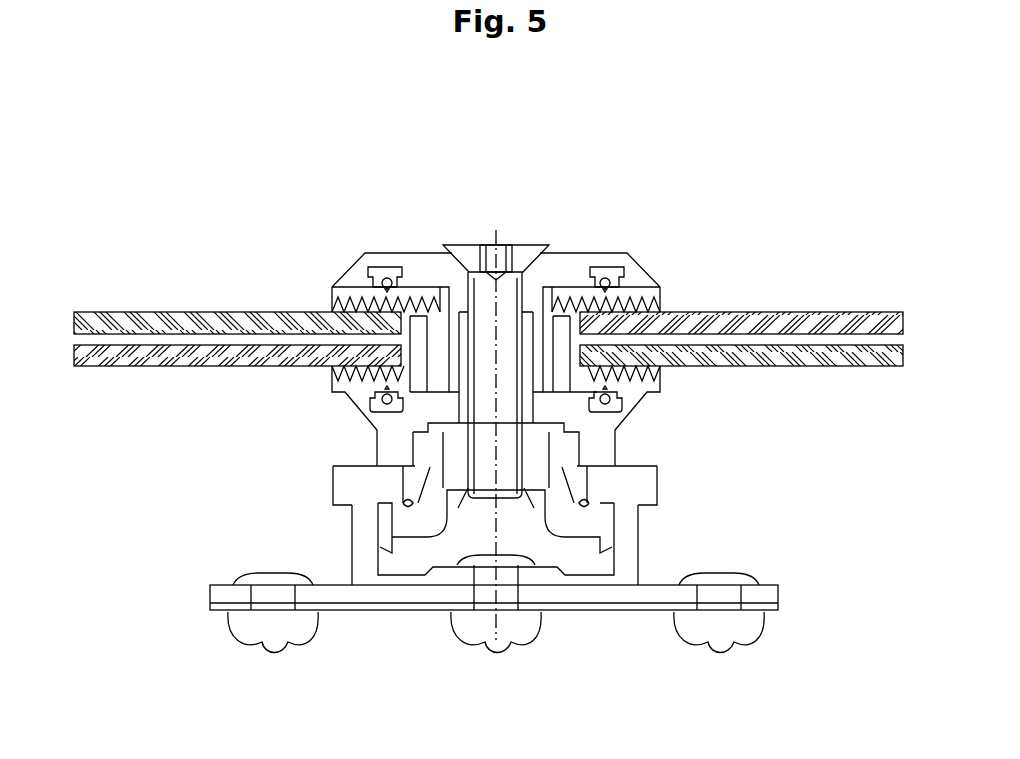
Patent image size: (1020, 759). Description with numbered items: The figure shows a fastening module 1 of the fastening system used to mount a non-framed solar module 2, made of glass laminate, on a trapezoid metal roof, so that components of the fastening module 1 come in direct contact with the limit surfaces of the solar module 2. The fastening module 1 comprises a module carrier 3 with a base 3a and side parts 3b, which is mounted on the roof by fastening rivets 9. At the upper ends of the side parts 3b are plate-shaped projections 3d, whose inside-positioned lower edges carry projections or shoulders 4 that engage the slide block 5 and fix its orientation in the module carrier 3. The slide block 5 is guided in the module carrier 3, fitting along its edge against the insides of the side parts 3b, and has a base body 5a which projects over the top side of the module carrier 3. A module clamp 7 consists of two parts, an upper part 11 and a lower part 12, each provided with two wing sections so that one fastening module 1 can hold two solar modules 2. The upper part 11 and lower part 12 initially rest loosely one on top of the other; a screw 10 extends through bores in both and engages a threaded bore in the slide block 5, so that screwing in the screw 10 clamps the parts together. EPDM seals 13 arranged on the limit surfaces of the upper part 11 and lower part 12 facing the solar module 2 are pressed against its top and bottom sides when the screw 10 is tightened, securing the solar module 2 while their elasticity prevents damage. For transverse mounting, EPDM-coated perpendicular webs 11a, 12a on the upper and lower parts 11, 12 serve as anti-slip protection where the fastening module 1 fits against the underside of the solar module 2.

The fastening module 1 is at (491, 182).
The solar module 2 is at (785, 289).
The module carrier 3 is at (666, 633).
The base plate 3a is at (590, 598).
The side parts 3b is at (366, 547).
The plate-shaped projections 3d is at (340, 480).
The shoulders 4 is at (410, 504).
The slide block 5 is at (496, 418).
The base body 5a is at (529, 463).
The module clamp 7 is at (574, 247).
The fastening rivets 9 is at (301, 637).
The screw 10 is at (477, 283).
The upper part 11 is at (621, 262).
The perpendicular webs 11a is at (458, 333).
The lower part 12 is at (377, 423).
The perpendicular webs 12a is at (437, 362).
The EPDM seals 13 is at (328, 292).